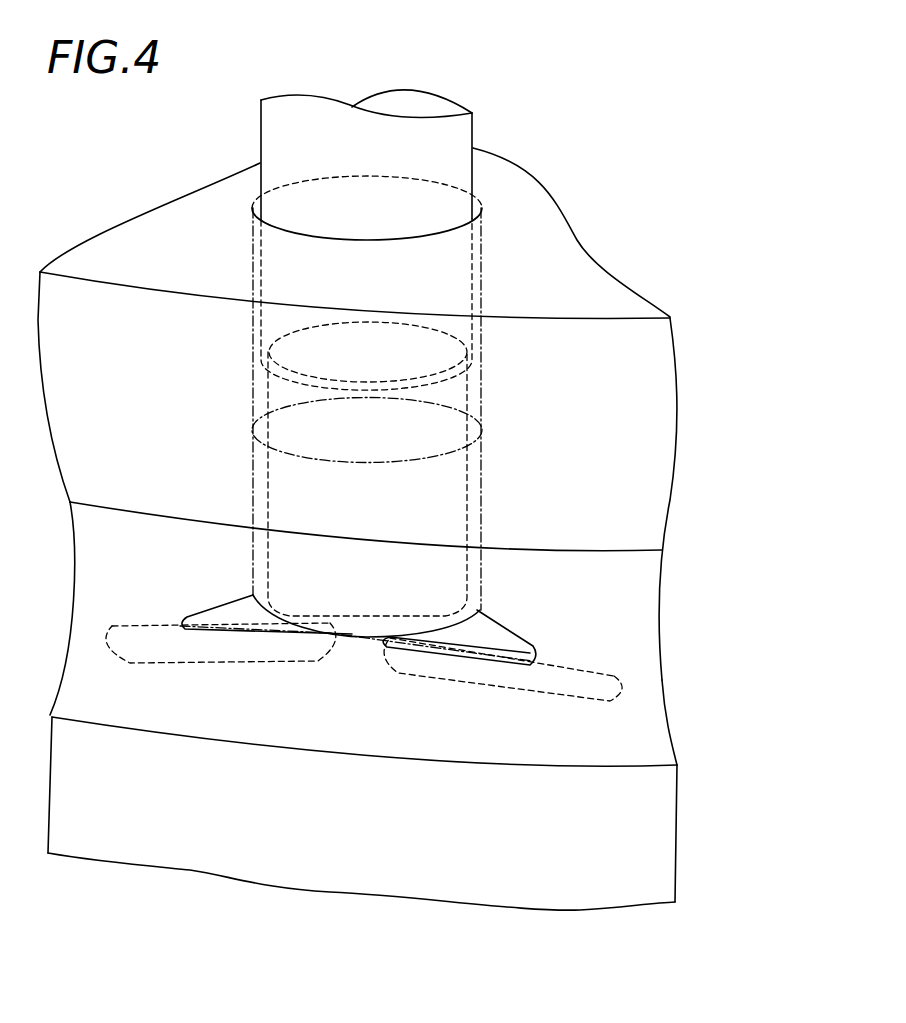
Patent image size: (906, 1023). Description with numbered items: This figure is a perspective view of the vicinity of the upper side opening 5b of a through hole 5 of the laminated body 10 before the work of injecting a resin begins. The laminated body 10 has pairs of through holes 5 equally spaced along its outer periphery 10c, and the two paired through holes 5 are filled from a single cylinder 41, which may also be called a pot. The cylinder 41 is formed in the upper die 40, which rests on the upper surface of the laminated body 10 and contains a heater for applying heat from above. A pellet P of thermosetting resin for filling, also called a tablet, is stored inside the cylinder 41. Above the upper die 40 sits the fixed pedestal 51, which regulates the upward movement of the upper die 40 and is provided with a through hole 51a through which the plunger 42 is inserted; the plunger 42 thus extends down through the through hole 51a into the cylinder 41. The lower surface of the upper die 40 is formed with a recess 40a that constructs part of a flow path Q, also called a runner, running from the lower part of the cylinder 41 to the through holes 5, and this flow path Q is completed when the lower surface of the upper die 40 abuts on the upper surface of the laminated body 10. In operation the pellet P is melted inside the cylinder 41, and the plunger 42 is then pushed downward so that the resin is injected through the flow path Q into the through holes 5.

The laminated body 10 is at (683, 832).
The outer periphery 10c is at (607, 893).
The upper die 40 is at (638, 675).
The recess 40a is at (240, 613).
The cylinder 41 is at (475, 462).
The plunger 42 is at (453, 141).
The through hole 5 is at (220, 650).
The upper side opening 5b is at (150, 636).
The fixed pedestal 51 is at (656, 433).
The through hole of fixed pedestal 51a is at (478, 374).
The pellet P is at (263, 458).
The flow path Q is at (227, 598).